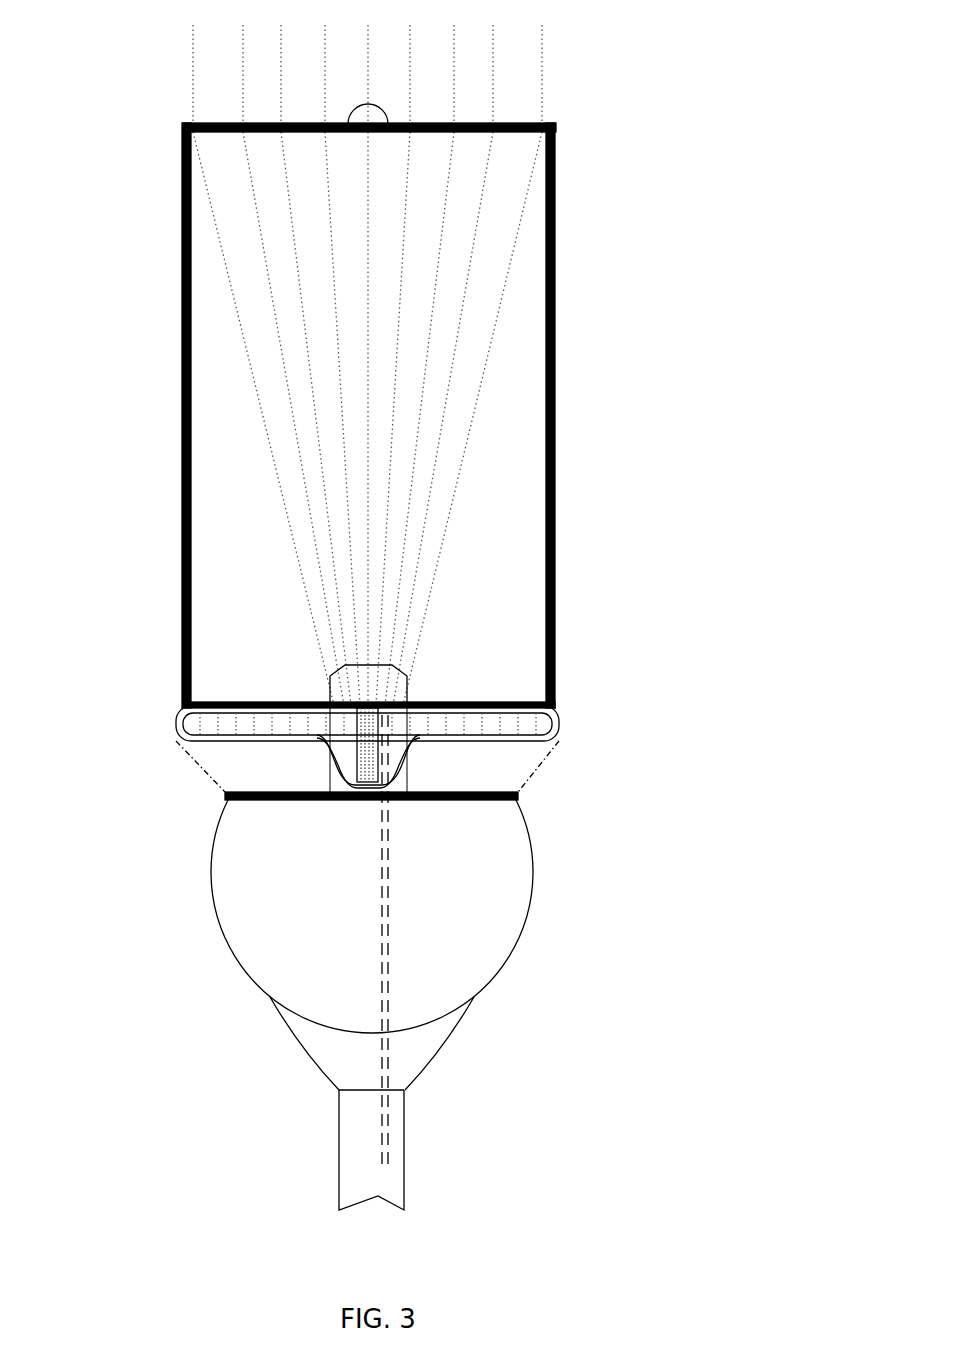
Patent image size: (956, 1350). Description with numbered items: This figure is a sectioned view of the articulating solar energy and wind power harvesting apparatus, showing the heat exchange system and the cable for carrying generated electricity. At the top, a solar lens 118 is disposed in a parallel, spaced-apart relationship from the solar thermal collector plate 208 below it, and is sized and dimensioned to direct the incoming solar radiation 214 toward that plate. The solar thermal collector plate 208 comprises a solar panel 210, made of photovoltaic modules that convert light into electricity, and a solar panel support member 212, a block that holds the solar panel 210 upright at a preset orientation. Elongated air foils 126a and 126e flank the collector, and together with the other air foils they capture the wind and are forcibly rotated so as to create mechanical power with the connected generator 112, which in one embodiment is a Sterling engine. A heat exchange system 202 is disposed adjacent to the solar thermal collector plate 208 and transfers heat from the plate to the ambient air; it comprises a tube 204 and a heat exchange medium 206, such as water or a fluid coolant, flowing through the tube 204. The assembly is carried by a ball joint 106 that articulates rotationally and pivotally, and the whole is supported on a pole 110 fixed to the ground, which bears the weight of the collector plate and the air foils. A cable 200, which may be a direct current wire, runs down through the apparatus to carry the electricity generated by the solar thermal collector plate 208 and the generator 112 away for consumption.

The ball joint 106 is at (530, 910).
The pole 110 is at (404, 1188).
The generator 112 is at (310, 1045).
The solar lens 118 is at (393, 108).
The air foil 126a is at (182, 390).
The air foil 126e is at (556, 403).
The cable 200 is at (388, 1120).
The heat exchange system 202 is at (350, 758).
The tube 204 is at (180, 730).
The heat exchange medium 206 is at (470, 732).
The solar thermal collector plate 208 is at (450, 702).
The solar panel 210 is at (390, 665).
The solar panel support member 212 is at (407, 667).
The solar radiation 214 is at (190, 55).